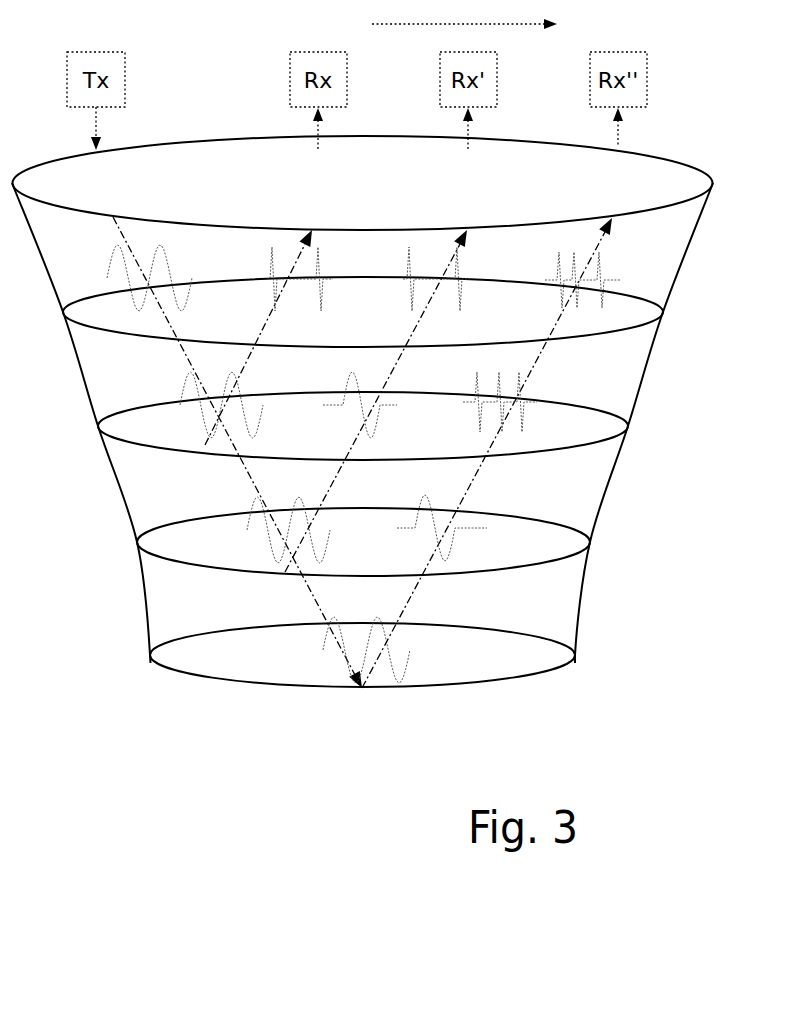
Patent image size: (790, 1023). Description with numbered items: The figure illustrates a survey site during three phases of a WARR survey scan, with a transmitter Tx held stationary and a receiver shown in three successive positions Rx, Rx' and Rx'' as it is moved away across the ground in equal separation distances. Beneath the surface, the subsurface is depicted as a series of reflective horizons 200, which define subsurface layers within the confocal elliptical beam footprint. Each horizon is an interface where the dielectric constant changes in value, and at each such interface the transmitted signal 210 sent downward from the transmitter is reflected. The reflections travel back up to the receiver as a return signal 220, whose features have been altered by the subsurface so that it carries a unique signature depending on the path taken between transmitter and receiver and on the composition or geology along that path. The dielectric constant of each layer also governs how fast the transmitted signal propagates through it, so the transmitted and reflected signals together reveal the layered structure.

The reflective horizons 200 is at (663, 312).
The transmitted signal 210 is at (240, 452).
The return signal 220 is at (425, 453).